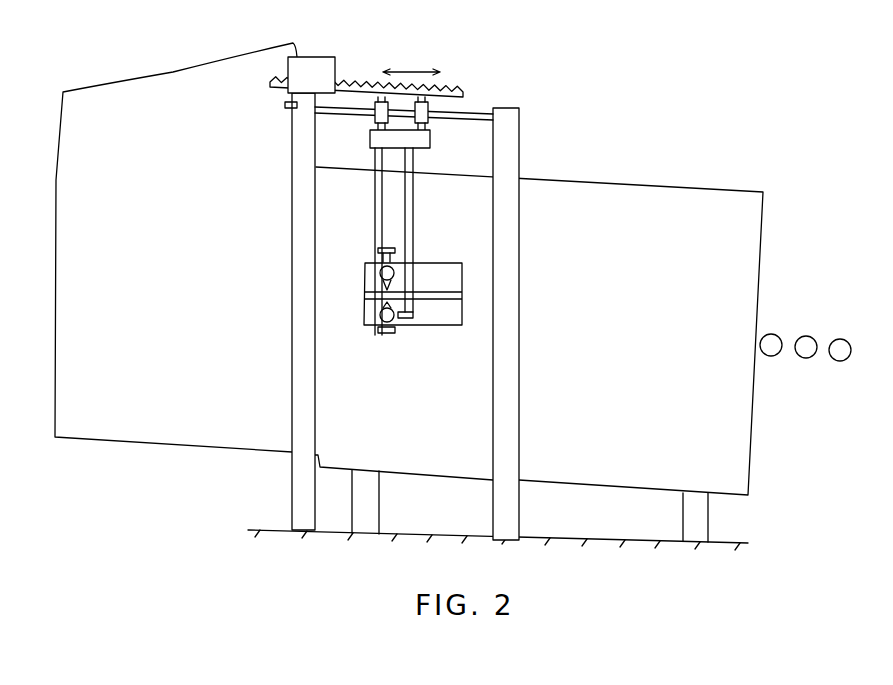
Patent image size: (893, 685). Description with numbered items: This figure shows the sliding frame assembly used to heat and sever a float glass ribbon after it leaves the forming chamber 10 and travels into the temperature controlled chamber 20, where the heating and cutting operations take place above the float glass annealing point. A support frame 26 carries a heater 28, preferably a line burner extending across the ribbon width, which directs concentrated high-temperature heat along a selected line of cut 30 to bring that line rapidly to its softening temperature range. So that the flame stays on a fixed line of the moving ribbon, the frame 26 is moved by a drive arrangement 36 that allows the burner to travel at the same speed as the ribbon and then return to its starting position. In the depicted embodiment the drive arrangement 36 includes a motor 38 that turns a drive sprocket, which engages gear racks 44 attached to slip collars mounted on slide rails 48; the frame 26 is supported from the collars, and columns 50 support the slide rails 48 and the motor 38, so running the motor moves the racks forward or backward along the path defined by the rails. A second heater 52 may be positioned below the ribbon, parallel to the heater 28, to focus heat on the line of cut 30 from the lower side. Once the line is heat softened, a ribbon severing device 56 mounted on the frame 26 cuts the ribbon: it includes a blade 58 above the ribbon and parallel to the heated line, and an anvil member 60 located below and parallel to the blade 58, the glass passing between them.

The forming chamber 10 is at (207, 65).
The temperature controlled chamber 20 is at (653, 183).
The support frame 26 is at (372, 198).
The heater 28 is at (380, 268).
The line of cut 30 is at (390, 295).
The drive arrangement 36 is at (348, 57).
The motor 38 is at (300, 57).
The gear racks 44 is at (453, 82).
The slide rails 48 is at (487, 112).
The columns 50 is at (295, 152).
The second heater 52 is at (382, 316).
The ribbon severing device 56 is at (385, 338).
The blade 58 is at (413, 277).
The anvil member 60 is at (418, 313).